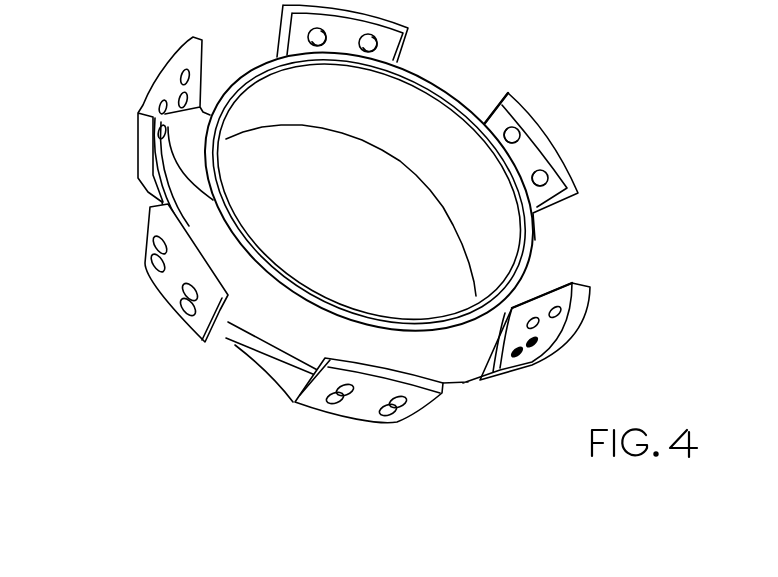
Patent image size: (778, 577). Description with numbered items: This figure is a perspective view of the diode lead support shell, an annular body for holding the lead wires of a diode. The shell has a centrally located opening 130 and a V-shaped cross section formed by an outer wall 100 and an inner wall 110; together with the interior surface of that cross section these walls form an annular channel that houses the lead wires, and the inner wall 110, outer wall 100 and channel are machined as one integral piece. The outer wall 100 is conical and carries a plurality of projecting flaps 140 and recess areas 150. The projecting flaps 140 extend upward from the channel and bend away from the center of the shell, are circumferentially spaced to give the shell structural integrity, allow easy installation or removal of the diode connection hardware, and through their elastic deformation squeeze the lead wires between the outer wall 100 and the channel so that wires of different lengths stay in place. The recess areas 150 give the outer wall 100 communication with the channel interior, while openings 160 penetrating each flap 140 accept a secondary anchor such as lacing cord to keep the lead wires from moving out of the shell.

The outer wall 100 is at (143, 72).
The inner wall 110 is at (413, 70).
The centrally located opening 130 is at (358, 206).
The projecting flaps 140 is at (557, 143).
The recess areas 150 is at (543, 252).
The openings 160 is at (177, 307).